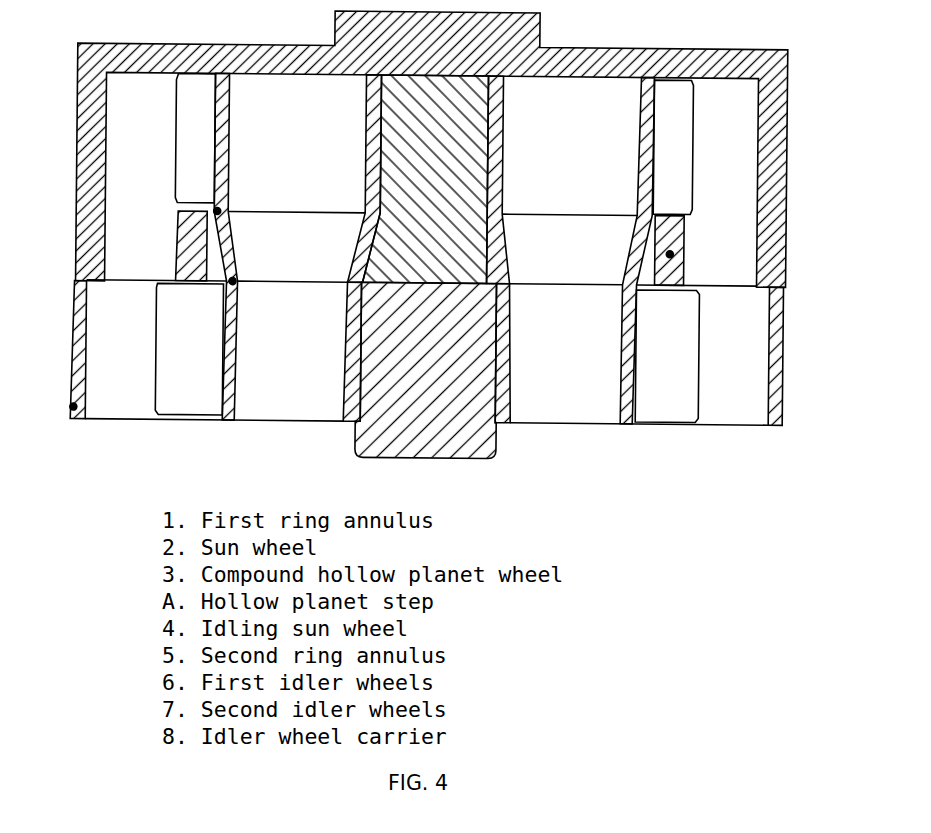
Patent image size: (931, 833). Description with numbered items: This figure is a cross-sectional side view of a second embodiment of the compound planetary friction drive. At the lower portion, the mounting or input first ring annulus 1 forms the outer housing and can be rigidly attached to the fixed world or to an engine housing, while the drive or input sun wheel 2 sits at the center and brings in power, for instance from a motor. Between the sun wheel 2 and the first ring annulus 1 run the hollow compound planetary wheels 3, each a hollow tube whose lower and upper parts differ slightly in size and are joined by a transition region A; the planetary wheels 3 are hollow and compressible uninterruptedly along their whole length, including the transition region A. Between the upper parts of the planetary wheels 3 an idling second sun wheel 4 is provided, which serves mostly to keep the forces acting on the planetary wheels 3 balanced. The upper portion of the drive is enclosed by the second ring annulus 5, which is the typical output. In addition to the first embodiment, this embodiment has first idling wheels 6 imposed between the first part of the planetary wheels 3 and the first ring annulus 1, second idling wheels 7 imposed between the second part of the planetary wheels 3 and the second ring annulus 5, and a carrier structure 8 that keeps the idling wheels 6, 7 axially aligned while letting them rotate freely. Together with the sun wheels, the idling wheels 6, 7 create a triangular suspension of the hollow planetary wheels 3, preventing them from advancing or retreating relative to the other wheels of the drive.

The first ring annulus 1 is at (75, 410).
The sun wheel 2 is at (427, 370).
The hollow compound planetary wheel 3 is at (433, 248).
The transition region A is at (217, 213).
The idling second sun wheel 4 is at (430, 179).
The second ring annulus 5 is at (432, 148).
The first idling wheels 6 is at (423, 352).
The second idling wheels 7 is at (427, 143).
The carrier structure 8 is at (670, 252).